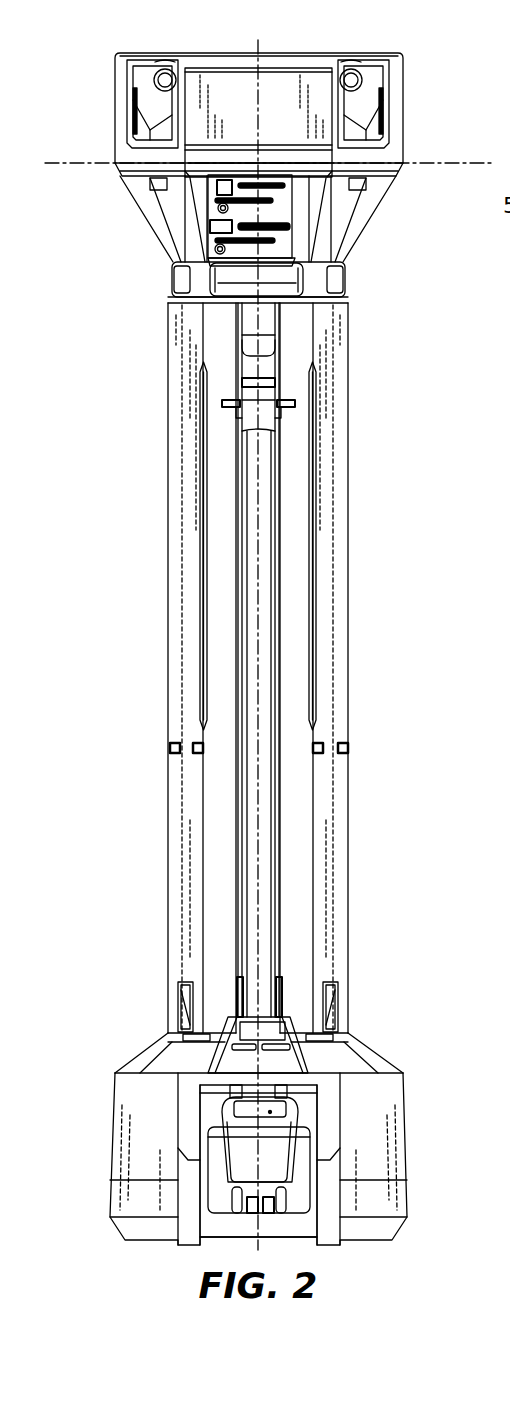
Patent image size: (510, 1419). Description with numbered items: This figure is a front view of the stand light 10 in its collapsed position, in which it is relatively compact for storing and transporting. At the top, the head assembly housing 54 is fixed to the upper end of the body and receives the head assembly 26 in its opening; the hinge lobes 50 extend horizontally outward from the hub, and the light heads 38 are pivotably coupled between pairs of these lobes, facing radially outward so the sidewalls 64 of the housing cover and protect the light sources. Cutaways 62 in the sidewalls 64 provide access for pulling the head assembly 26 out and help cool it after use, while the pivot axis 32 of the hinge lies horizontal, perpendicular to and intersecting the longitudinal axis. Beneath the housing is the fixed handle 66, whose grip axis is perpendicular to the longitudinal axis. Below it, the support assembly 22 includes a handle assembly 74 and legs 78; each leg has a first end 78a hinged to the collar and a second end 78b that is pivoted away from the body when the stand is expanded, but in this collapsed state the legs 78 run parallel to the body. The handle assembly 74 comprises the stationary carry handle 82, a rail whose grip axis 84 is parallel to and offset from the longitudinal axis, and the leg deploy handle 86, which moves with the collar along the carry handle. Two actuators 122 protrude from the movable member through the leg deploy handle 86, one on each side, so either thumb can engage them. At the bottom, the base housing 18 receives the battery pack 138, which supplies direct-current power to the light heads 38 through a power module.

The stand light 10 is at (265, 91).
The base housing 18 is at (142, 1110).
The support assembly 22 is at (264, 272).
The head assembly 26 is at (100, 87).
The pivot axis 32 is at (442, 165).
The light head 38 is at (143, 100).
The hinge lobes 50 is at (170, 53).
The head assembly housing 54 is at (242, 219).
The cutaways 62 is at (345, 233).
The sidewalls 64 is at (147, 202).
The fixed handle 66 is at (340, 279).
The handle assembly 74 is at (311, 272).
The legs 78 is at (258, 672).
The first end of leg 78a is at (164, 304).
The second end of leg 78b is at (175, 1017).
The stationary carry handle 82 is at (268, 782).
The grip axis 84 is at (260, 705).
The leg deploy handle 86 is at (257, 660).
The actuator 122 is at (222, 403).
The battery pack 138 is at (273, 1150).